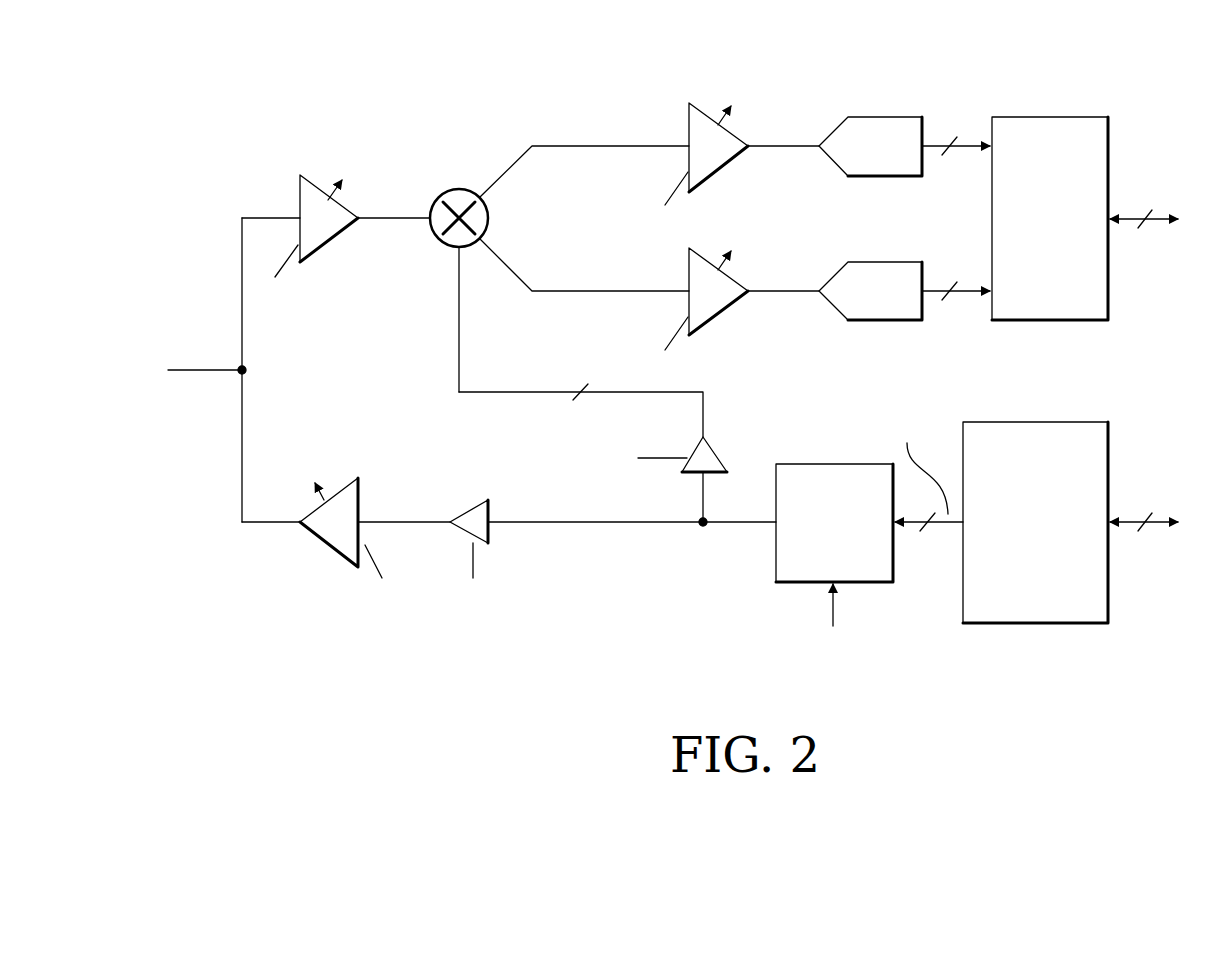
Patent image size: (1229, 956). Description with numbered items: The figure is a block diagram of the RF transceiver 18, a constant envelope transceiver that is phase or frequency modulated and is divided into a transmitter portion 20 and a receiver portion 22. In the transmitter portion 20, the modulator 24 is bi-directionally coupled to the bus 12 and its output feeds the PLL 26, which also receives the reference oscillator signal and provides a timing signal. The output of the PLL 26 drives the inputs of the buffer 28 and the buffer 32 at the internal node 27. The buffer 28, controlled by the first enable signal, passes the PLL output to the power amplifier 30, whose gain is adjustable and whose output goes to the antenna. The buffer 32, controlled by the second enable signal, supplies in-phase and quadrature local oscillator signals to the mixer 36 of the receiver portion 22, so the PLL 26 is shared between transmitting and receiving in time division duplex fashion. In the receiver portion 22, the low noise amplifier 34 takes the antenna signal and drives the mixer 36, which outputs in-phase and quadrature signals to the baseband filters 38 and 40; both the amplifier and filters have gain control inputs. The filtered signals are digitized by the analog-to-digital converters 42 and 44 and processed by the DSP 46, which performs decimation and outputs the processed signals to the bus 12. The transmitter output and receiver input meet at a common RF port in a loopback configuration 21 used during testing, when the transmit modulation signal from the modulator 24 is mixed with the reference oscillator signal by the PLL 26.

The RF transceiver 18 is at (173, 84).
The bus 12 is at (1167, 374).
The transmitter portion 20 is at (244, 541).
The loopback configuration 21 is at (243, 412).
The receiver portion 22 is at (243, 192).
The modulator 24 is at (1024, 571).
The PLL 26 is at (822, 560).
The internal node 27 is at (703, 527).
The buffer 28 is at (470, 502).
The power amplifier 30 is at (330, 548).
The buffer 32 is at (722, 451).
The low noise amplifier 34 is at (325, 249).
The mixer 36 is at (462, 189).
The baseband filter 38 is at (717, 177).
The baseband filter 40 is at (717, 322).
The analog-to-digital converter 42 is at (885, 116).
The analog-to-digital converter 44 is at (885, 261).
The DSP 46 is at (1038, 268).